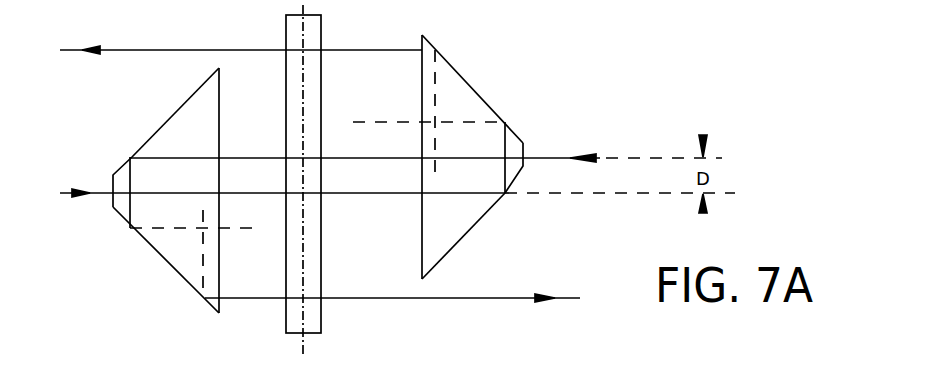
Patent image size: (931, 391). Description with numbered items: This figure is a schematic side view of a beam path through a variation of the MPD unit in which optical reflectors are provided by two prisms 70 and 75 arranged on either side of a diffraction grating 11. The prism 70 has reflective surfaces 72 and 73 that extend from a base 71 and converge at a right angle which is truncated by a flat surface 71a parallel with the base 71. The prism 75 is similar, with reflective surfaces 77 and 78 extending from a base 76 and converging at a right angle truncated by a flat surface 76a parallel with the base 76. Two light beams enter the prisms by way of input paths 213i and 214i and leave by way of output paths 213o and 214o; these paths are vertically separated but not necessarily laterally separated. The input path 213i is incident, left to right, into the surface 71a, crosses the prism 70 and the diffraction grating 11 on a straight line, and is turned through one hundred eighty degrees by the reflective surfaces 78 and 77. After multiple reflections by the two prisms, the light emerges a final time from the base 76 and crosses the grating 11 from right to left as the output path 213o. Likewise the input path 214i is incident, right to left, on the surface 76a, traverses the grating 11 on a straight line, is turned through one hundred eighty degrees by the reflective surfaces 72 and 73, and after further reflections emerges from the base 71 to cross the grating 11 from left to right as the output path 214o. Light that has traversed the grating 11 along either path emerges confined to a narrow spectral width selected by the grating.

The diffraction grating 11 is at (322, 316).
The prism 70 is at (159, 185).
The base 71 is at (222, 143).
The flat surface 71a is at (113, 207).
The reflective surface 72 is at (200, 83).
The reflective surface 73 is at (152, 246).
The prism 75 is at (478, 154).
The base 76 is at (420, 260).
The flat surface 76a is at (525, 167).
The reflective surface 77 is at (492, 110).
The reflective surface 78 is at (496, 202).
The output path 213o is at (183, 45).
The input path 213i is at (107, 193).
The output path 214o is at (451, 297).
The input path 214i is at (540, 156).